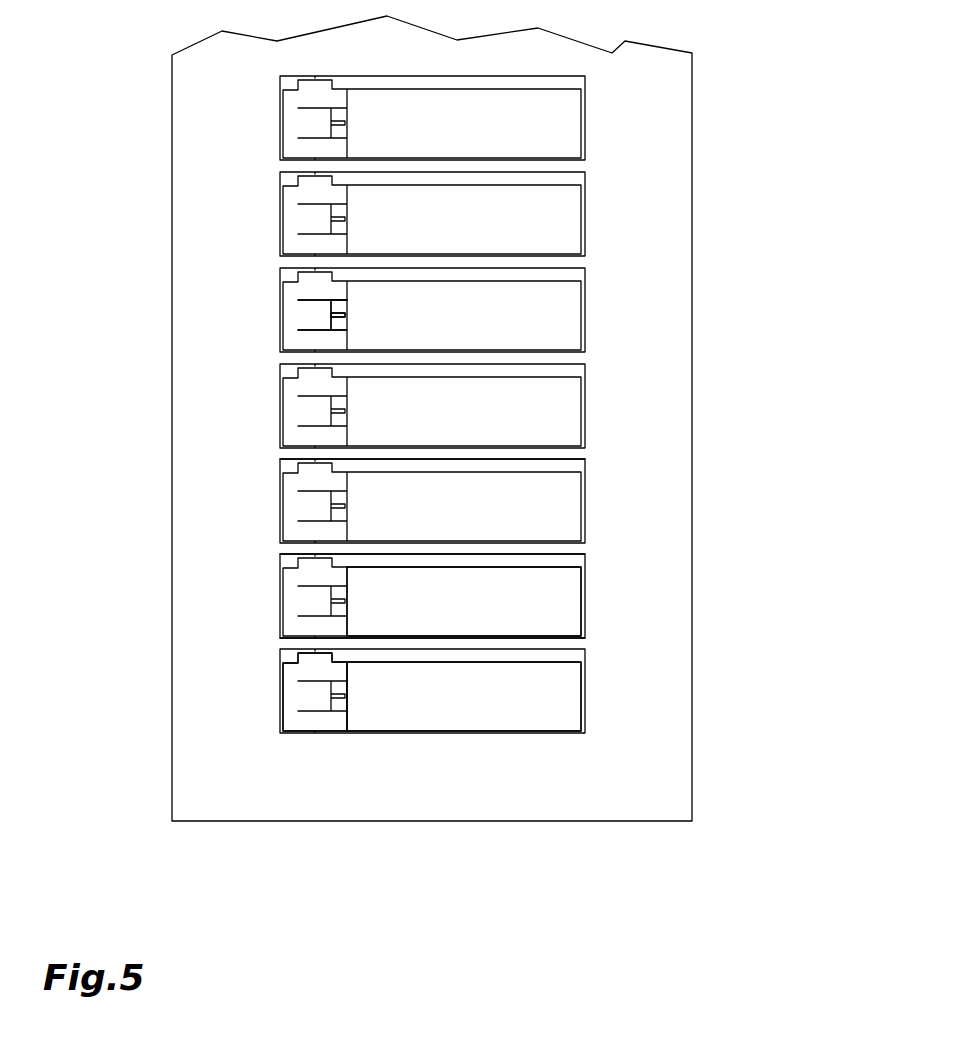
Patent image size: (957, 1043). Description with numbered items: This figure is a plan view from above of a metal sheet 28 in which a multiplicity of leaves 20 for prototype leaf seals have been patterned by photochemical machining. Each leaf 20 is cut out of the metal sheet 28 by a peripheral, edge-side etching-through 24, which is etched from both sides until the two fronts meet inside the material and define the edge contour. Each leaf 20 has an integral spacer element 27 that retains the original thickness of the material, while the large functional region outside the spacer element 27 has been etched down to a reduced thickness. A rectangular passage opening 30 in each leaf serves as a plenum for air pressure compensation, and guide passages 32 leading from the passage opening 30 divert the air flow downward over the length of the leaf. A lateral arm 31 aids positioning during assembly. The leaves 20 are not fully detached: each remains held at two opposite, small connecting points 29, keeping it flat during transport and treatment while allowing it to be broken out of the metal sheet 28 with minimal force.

The leaf 20 is at (462, 602).
The etching-through 24 is at (268, 212).
The integral spacer element 27 is at (313, 719).
The metal sheet 28 is at (627, 797).
The connecting point 29 is at (315, 552).
The passage opening 30 is at (308, 314).
The lateral arm 31 is at (313, 461).
The guide passage 32 is at (358, 317).